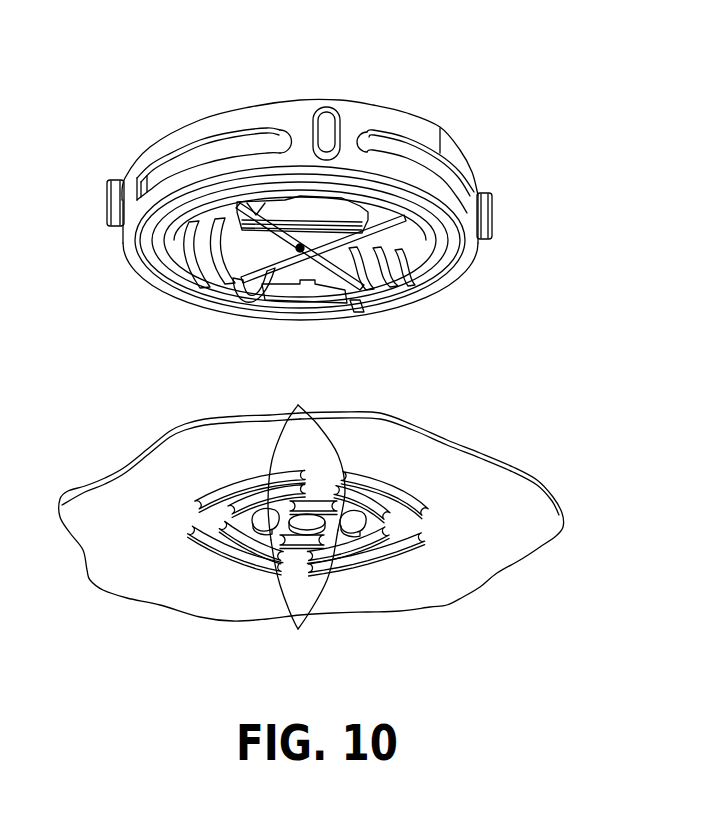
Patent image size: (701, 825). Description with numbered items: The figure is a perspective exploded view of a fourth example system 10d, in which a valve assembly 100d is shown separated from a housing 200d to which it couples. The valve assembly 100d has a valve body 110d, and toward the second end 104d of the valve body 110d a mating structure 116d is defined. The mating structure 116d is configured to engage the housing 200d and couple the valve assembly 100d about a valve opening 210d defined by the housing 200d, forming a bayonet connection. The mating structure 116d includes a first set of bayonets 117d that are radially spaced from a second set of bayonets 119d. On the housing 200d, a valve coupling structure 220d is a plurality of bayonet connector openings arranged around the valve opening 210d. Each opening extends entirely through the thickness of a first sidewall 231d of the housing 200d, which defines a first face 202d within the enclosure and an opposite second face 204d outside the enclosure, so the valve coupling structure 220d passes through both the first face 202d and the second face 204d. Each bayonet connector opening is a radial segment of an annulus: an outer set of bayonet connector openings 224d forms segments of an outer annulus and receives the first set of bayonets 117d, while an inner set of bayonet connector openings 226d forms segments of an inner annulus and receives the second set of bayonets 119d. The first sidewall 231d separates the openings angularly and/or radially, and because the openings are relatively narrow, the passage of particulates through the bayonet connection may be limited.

The fourth example system 10d is at (145, 100).
The valve assembly 100d is at (282, 70).
The valve body 110d is at (336, 97).
The second end 104d is at (118, 270).
The mating structure 116d is at (432, 253).
The first set of bayonets 117d is at (405, 258).
The second set of bayonets 119d is at (281, 298).
The housing 200d is at (537, 479).
The first face 202d is at (460, 572).
The second face 204d is at (108, 474).
The first sidewall 231d is at (448, 447).
The valve coupling structure 220d is at (390, 465).
The outer set of bayonet connector openings 224d is at (303, 400).
The inner set of bayonet connector openings 226d is at (298, 629).
The valve opening 210d is at (372, 523).